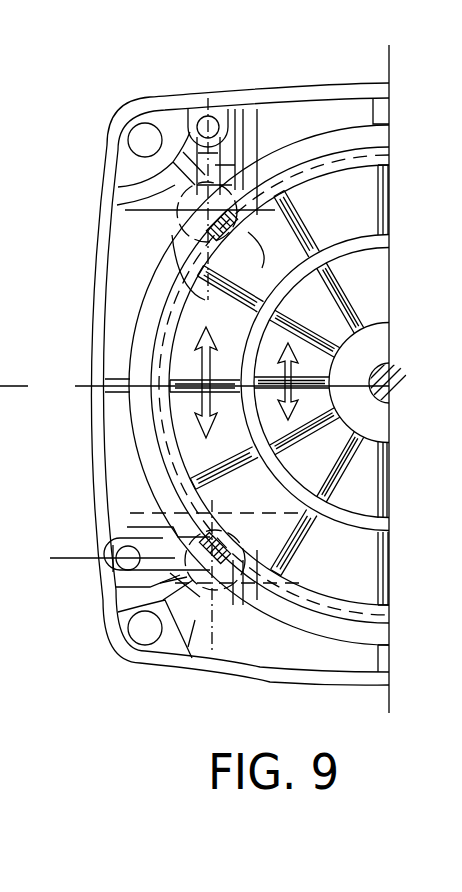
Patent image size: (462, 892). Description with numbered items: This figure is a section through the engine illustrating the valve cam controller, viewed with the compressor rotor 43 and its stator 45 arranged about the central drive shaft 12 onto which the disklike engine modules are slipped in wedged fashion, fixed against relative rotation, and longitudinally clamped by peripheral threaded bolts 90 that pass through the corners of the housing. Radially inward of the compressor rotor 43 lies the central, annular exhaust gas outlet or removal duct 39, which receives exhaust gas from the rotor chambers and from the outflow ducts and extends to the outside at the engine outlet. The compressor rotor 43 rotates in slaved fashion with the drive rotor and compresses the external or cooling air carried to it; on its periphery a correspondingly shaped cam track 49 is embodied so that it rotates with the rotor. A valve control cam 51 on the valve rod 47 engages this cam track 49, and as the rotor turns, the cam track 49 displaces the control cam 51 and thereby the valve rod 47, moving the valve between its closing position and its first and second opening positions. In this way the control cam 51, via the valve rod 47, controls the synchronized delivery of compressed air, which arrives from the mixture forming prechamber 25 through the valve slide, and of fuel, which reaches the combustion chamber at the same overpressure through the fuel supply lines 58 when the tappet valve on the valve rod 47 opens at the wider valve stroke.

The central drive shaft 12 is at (386, 380).
The mixture forming prechamber 25 is at (125, 211).
The exhaust gas outlet or removal duct 39 is at (367, 283).
The compressor rotor 43 is at (365, 208).
The stator 45 is at (375, 130).
The valve rod 47 is at (247, 120).
The cam track 49 is at (345, 152).
The valve control cam 51 is at (235, 240).
The fuel supply line 58 is at (205, 120).
The peripheral threaded bolt 90 is at (145, 140).